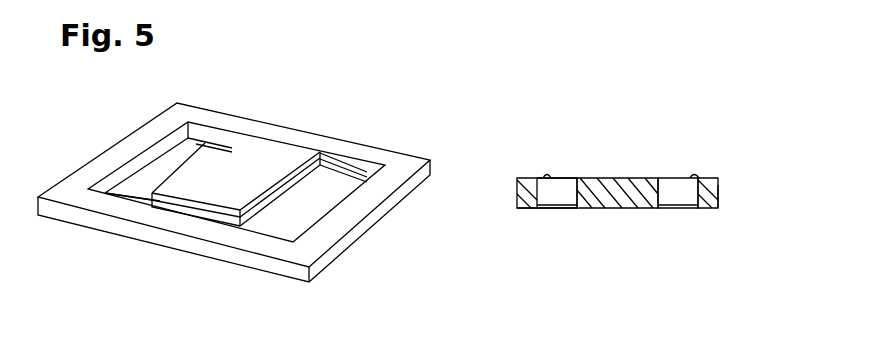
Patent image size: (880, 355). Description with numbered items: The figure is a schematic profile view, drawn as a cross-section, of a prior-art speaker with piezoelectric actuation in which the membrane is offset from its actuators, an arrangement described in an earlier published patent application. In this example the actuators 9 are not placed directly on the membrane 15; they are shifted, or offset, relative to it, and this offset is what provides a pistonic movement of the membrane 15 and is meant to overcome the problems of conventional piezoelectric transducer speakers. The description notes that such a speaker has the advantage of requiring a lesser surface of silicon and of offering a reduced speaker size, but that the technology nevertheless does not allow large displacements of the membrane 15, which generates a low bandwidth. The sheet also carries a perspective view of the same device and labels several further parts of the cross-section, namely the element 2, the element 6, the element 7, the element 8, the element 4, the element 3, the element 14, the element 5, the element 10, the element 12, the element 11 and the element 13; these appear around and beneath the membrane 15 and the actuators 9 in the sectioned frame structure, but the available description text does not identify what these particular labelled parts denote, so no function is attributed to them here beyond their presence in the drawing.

The frame 2 is at (515, 193).
The gap 6 is at (523, 201).
The bottom layer 7 is at (535, 210).
The actuators 9 is at (560, 210).
The top bump 8 is at (550, 176).
The top membrane 4 is at (567, 177).
The membrane 15 is at (612, 177).
The chip layer 3 is at (583, 210).
The chip layer 14 is at (598, 210).
The chip layer 5 is at (615, 210).
The chip layer 10 is at (640, 210).
The top membrane right 12 is at (667, 177).
The frame right 11 is at (695, 175).
The frame side 13 is at (700, 198).